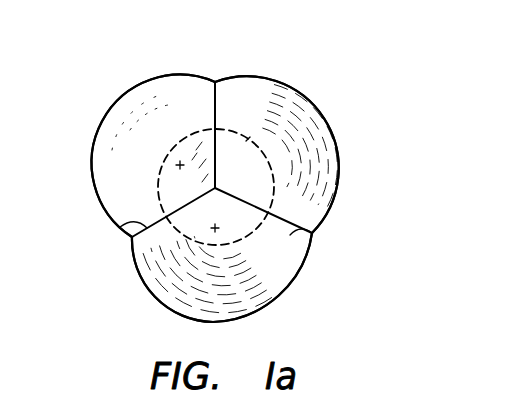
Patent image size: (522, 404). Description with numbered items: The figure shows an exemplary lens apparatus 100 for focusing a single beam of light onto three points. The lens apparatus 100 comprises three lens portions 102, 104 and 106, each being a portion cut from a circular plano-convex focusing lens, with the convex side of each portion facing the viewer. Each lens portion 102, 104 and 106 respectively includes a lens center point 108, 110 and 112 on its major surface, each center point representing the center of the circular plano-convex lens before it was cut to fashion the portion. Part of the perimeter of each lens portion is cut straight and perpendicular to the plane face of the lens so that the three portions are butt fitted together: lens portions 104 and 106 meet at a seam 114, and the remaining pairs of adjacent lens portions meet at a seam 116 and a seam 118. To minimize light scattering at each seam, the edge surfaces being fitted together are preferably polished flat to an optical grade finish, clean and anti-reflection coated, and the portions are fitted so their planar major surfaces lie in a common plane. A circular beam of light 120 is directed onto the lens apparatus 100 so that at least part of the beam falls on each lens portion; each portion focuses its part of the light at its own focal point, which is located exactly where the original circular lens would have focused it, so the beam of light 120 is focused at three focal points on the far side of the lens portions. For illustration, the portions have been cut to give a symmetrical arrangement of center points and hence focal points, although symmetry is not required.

The lens apparatus 100 is at (364, 112).
The lens portion 102 is at (333, 215).
The lens portion 104 is at (133, 262).
The lens portion 106 is at (121, 97).
The lens center point 108 is at (249, 165).
The lens center point 110 is at (217, 230).
The lens center point 112 is at (180, 165).
The seam 114 is at (118, 224).
The seam 116 is at (215, 100).
The seam 118 is at (312, 233).
The circular beam of light 120 is at (250, 137).